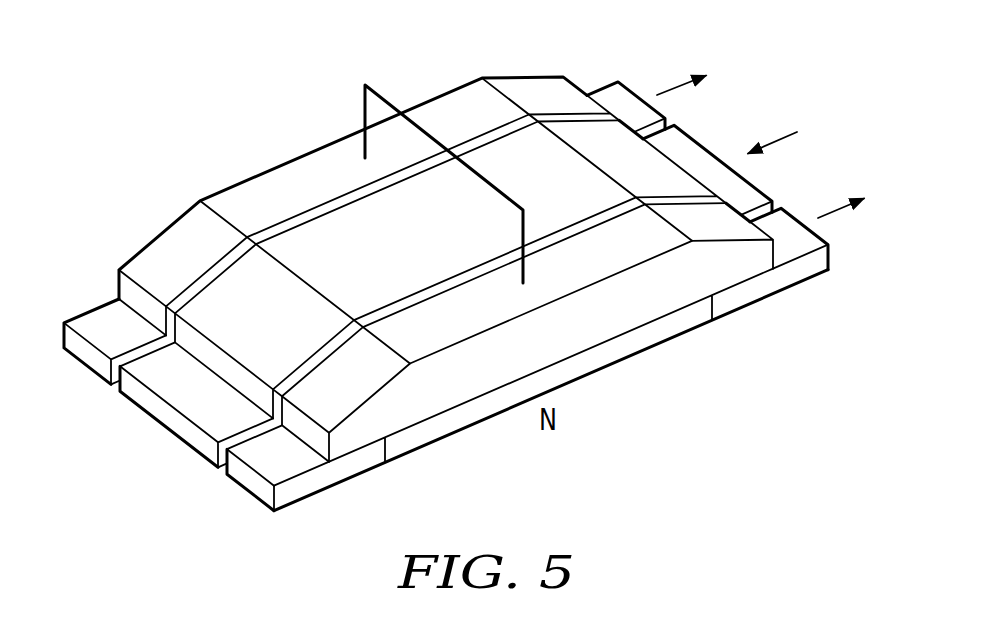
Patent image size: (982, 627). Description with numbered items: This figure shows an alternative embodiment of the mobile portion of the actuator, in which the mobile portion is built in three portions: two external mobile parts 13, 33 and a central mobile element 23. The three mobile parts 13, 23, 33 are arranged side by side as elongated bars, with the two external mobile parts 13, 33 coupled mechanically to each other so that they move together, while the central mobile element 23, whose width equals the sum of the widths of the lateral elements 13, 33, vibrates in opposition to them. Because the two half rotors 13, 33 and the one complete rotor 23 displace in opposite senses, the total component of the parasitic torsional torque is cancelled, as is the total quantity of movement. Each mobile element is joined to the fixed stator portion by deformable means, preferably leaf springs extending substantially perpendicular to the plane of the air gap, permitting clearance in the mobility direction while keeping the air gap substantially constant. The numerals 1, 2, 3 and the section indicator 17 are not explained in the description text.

The first permanent magnet 1 is at (115, 351).
The second permanent magnet 2 is at (196, 405).
The third permanent magnet 3 is at (278, 476).
The external mobile part 13 is at (538, 92).
The section plane indicator 17 is at (418, 125).
The central mobile element 23 is at (670, 123).
The external mobile part 33 is at (730, 213).